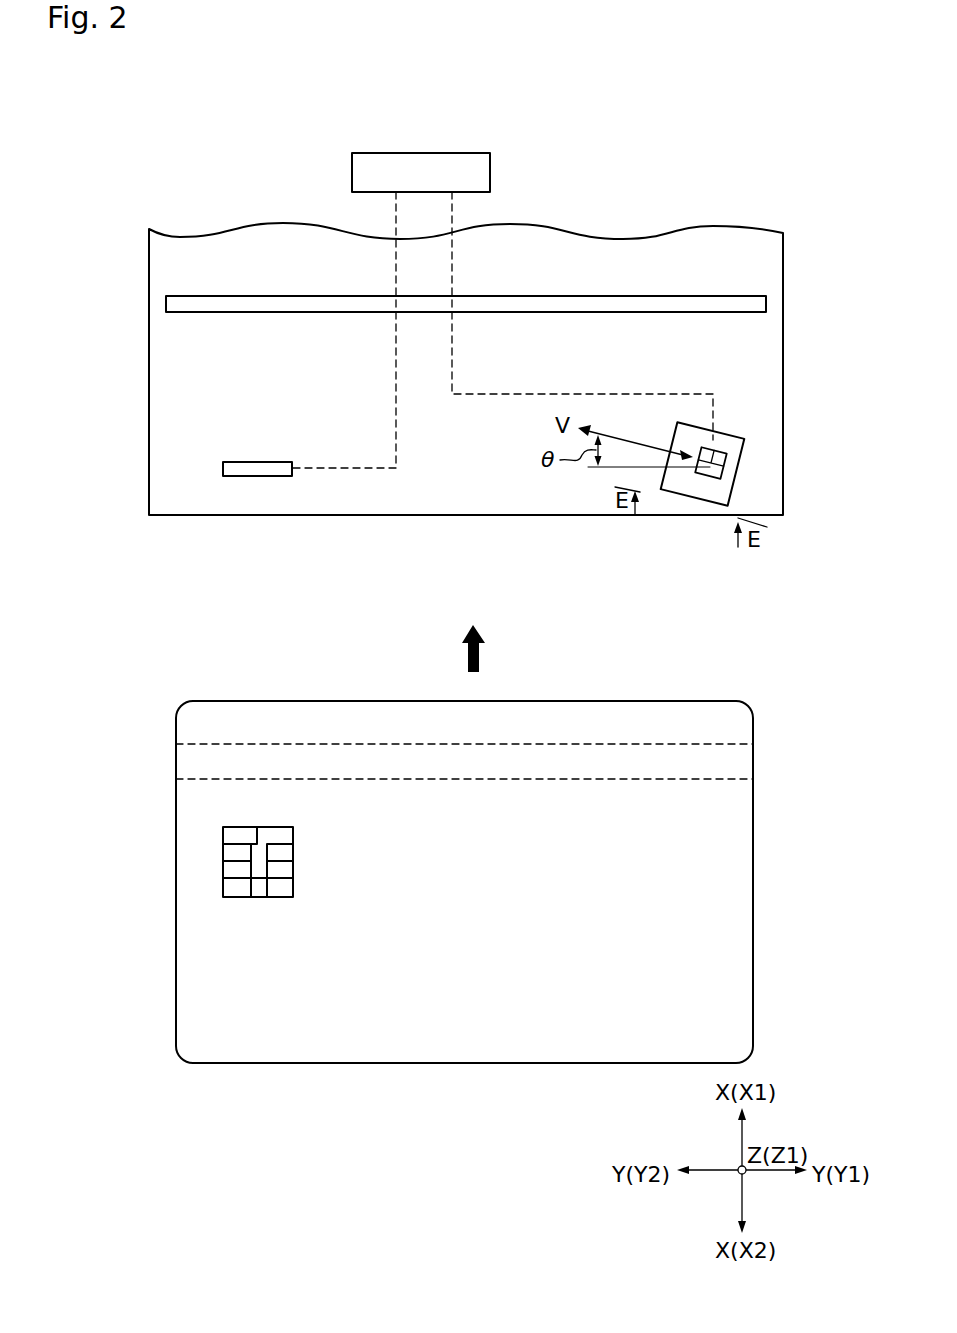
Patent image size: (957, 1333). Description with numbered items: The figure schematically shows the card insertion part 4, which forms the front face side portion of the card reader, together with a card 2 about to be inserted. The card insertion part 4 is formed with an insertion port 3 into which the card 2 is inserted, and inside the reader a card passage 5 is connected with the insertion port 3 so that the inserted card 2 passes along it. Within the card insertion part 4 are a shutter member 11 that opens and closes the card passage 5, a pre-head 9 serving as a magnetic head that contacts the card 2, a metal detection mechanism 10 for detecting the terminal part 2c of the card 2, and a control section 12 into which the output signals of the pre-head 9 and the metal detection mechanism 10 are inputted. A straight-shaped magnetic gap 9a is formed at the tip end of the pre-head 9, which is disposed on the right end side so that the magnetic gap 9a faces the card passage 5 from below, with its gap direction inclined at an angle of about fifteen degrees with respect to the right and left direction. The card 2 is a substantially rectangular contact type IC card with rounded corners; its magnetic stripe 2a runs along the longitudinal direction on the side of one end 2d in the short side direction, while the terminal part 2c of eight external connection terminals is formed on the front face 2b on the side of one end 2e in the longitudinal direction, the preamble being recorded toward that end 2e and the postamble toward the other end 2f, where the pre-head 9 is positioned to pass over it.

The card 2 is at (463, 882).
The magnetic stripe 2a is at (668, 781).
The front face of card 2b is at (598, 855).
The terminal part 2c is at (293, 850).
The one end in short side direction of card 2d is at (362, 700).
The one end in longitudinal direction of card 2e is at (176, 866).
The other end in longitudinal direction of card 2f is at (753, 863).
The insertion port 3 is at (523, 517).
The card insertion part 4 is at (783, 347).
The card passage 5 is at (727, 272).
The pre-head 9 is at (737, 477).
The magnetic gap 9a is at (717, 452).
The metal detection mechanism 10 is at (238, 462).
The shutter member 11 is at (567, 296).
The control section 12 is at (490, 170).